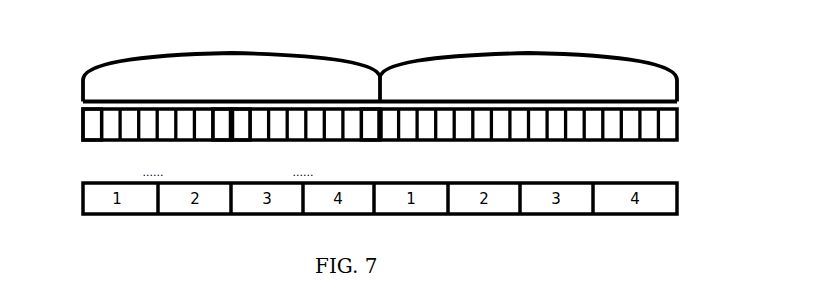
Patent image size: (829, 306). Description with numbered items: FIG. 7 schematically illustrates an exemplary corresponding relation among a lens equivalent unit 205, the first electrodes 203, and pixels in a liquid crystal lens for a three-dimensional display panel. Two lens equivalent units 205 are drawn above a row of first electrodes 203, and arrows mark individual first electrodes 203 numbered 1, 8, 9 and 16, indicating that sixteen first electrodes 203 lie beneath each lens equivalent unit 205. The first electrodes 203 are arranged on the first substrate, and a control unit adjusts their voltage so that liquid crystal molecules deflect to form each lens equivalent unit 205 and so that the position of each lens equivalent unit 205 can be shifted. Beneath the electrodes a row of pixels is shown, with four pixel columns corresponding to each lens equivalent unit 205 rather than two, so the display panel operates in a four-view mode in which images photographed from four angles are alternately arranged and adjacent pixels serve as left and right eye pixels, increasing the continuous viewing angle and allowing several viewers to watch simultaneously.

The lens equivalent unit 205 is at (82, 84).
The first electrodes 203 is at (82, 123).
The first pixel unit 1 is at (93, 143).
The eighth pixel unit 8 is at (222, 143).
The ninth pixel unit 9 is at (242, 143).
The sixteenth pixel unit 16 is at (374, 143).